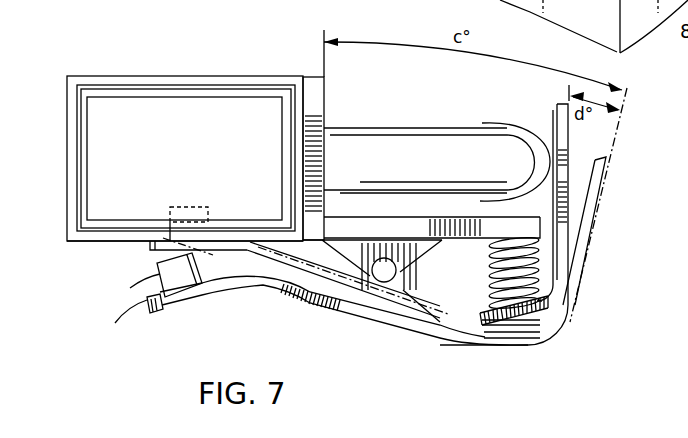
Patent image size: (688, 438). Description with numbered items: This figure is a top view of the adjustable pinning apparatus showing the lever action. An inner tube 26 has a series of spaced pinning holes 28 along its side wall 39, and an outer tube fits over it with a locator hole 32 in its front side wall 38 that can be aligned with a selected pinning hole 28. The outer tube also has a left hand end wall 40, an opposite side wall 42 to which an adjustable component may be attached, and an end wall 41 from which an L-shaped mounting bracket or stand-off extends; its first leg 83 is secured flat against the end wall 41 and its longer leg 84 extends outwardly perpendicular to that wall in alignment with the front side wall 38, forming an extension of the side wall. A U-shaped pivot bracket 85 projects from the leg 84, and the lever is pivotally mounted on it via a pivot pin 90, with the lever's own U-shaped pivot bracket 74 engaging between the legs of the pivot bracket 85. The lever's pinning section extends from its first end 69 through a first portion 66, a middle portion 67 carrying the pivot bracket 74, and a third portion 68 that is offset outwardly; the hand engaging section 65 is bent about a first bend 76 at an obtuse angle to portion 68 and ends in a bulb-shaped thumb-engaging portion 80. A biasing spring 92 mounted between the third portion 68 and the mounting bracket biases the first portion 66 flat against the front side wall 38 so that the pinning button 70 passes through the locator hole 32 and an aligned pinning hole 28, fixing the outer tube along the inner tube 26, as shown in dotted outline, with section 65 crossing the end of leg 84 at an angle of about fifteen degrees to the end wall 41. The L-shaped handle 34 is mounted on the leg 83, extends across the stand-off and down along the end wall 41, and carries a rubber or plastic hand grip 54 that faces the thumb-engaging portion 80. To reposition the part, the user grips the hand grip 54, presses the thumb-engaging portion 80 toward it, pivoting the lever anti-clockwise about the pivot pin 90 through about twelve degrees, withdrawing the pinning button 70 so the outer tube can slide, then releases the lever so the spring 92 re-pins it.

The inner tube 26 is at (255, 85).
The pinning holes 28 is at (230, 234).
The locator hole 32 is at (140, 242).
The handle 34 is at (386, 137).
The front side wall 38 is at (73, 243).
The side wall 39 is at (130, 220).
The left hand end wall 40 is at (67, 163).
The end wall 41 is at (320, 112).
The opposite side wall 42 is at (197, 78).
The hand grip 54 is at (492, 122).
The hand engaging section 65 is at (600, 182).
The first portion 66 is at (178, 306).
The middle portion 67 is at (263, 284).
The third portion 68 is at (545, 305).
The first end 69 is at (115, 323).
The pinning button 70 is at (208, 207).
The pivot bracket 74 is at (403, 300).
The first bend 76 is at (560, 290).
The thumb-engaging portion 80 is at (556, 110).
The first leg 83 is at (318, 88).
The longer leg 84 is at (538, 227).
The pivot bracket 85 is at (436, 258).
The pivot pin 90 is at (382, 276).
The biasing spring 92 is at (540, 258).